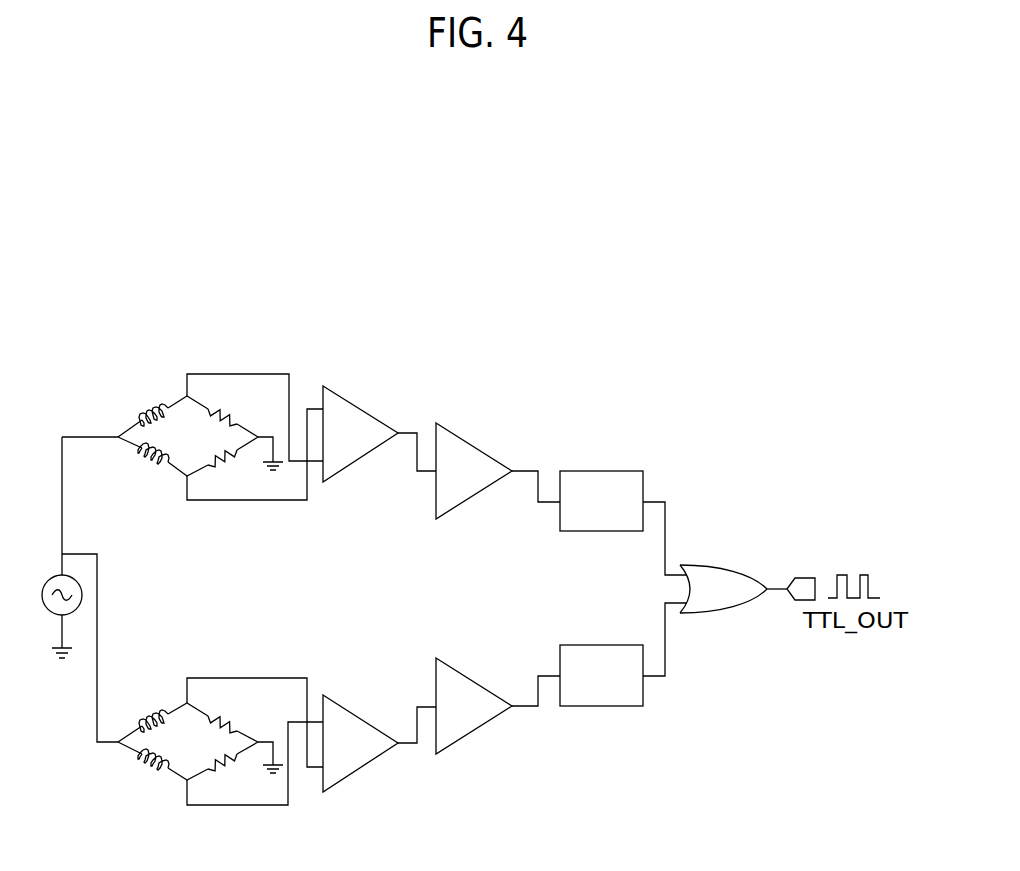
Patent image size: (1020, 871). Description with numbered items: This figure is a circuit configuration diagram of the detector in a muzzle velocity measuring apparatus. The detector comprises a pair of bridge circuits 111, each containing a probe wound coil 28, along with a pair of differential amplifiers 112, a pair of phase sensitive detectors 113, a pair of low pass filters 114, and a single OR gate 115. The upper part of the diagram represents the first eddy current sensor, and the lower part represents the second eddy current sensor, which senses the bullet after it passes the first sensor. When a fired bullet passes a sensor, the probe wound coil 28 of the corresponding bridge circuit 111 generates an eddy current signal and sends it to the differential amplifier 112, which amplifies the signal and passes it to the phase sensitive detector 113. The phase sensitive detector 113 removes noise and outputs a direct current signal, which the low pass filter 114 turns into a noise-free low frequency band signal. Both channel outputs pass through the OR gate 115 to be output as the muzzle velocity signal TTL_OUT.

The probe wound coil 28 is at (148, 410).
The bridge circuit 111 is at (177, 470).
The differential amplifier 112 is at (340, 475).
The phase sensitive detector 113 is at (475, 498).
The low pass filter 114 is at (582, 532).
The OR gate 115 is at (700, 614).